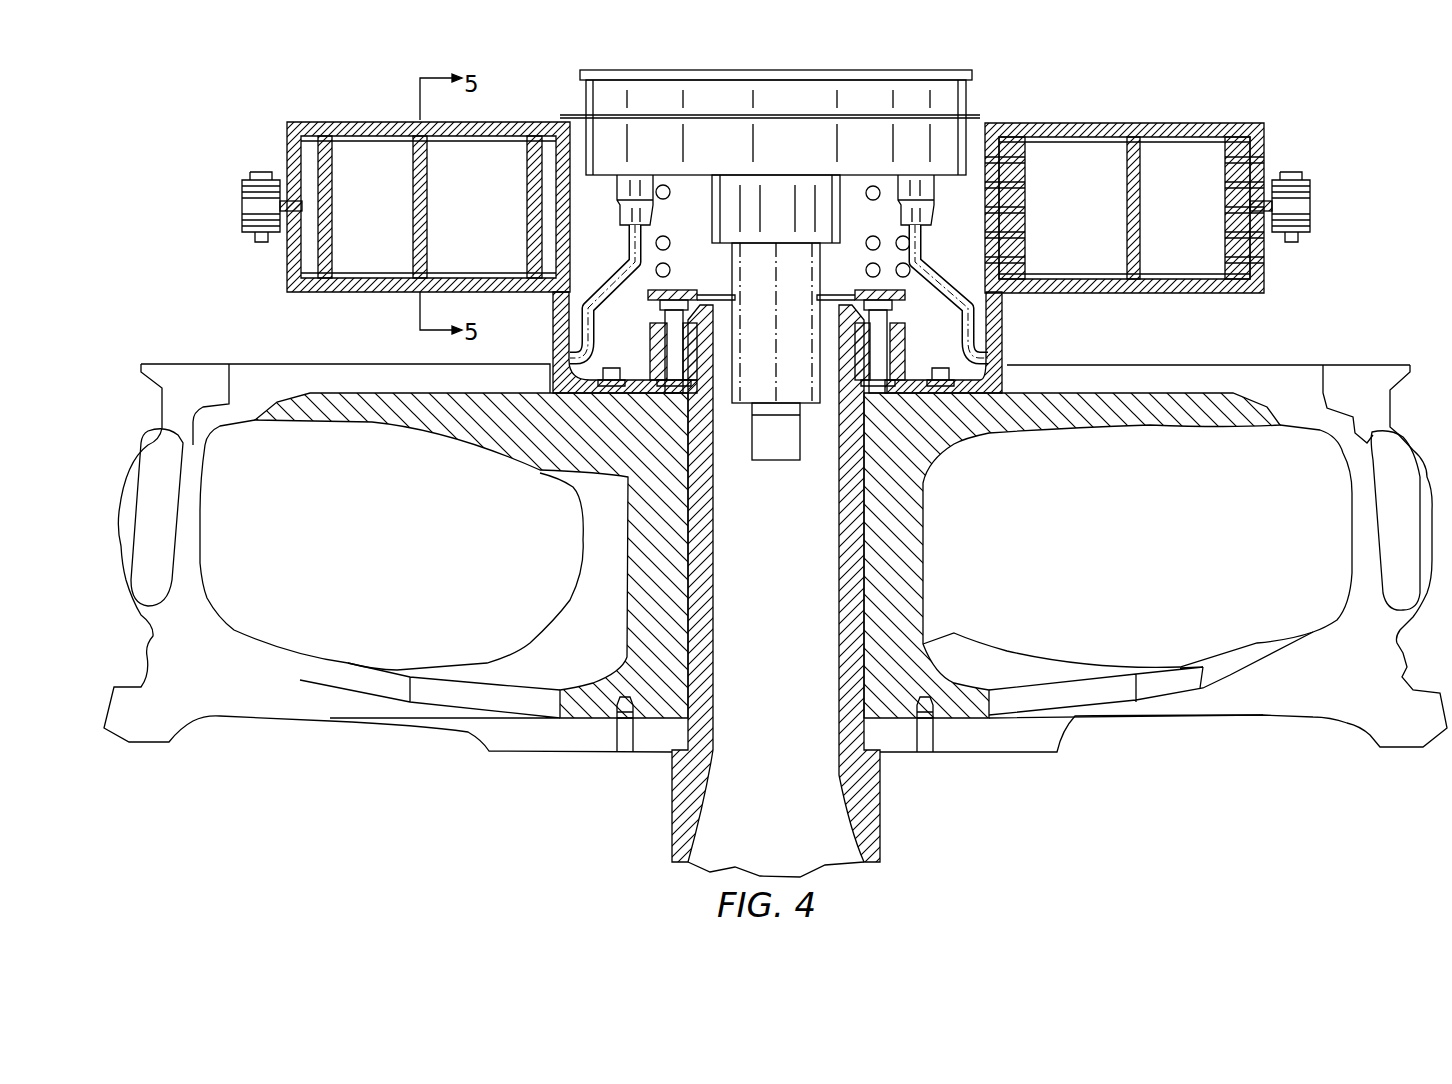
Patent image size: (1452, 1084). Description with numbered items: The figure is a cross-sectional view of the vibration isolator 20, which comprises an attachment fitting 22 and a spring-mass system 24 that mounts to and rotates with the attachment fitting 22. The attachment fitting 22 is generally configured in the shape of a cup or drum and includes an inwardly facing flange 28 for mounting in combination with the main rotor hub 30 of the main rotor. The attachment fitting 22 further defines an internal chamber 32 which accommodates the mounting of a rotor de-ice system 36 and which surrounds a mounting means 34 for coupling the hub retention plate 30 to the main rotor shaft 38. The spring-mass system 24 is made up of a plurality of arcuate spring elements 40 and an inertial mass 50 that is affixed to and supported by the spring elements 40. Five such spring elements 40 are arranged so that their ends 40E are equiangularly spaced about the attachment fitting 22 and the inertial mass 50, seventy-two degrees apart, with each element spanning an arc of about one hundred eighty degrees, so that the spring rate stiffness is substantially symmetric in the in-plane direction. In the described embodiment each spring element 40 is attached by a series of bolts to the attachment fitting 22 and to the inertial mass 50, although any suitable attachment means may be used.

The vibration isolator 20 is at (1252, 104).
The attachment fitting 22 is at (979, 203).
The spring-mass system 24 is at (390, 80).
The inwardly facing flange 28 is at (968, 386).
The main rotor hub 30 is at (1071, 408).
The internal chamber 32 is at (590, 200).
The mounting means 34 is at (686, 352).
The rotor de-ice system 36 is at (727, 90).
The main rotor shaft 38 is at (848, 548).
The arcuate spring elements 40 is at (415, 170).
The ends of the spring elements 40E is at (1014, 207).
The inertial mass 50 is at (332, 180).